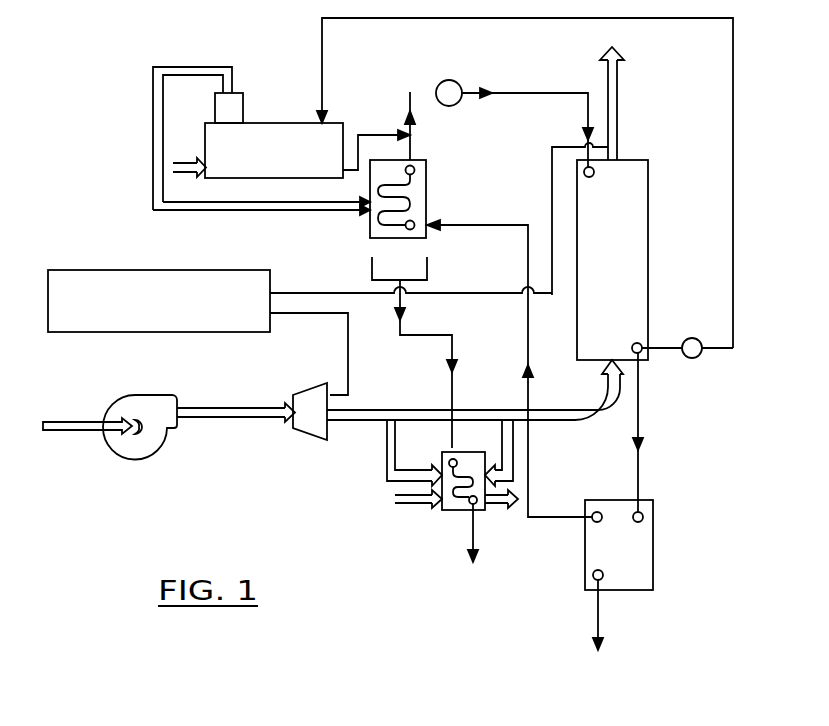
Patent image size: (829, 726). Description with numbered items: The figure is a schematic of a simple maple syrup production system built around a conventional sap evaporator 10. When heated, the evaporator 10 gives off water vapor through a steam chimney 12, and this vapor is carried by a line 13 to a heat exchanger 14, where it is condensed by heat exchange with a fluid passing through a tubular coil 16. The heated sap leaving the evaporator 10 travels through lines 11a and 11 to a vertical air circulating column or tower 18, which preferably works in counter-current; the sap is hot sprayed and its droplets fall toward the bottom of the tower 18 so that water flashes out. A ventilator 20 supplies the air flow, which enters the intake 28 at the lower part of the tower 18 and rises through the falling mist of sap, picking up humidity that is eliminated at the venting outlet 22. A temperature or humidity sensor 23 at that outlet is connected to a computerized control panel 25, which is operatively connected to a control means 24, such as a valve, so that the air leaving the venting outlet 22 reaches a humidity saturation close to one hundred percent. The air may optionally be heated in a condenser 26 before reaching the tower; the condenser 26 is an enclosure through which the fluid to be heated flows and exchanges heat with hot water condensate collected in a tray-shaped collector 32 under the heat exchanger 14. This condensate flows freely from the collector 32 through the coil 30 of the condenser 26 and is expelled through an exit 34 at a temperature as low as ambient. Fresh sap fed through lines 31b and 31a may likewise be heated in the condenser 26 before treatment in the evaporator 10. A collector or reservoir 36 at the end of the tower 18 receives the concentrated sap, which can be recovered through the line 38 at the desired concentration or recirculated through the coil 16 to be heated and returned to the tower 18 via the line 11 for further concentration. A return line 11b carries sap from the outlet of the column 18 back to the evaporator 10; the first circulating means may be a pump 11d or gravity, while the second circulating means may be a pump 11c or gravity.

The sap evaporator 10 is at (257, 166).
The line 11 is at (534, 92).
The line 11a is at (381, 133).
The return line 11b is at (733, 133).
The pump 11c is at (700, 357).
The pump 11d is at (451, 80).
The steam chimney 12 is at (245, 106).
The line 13 is at (245, 211).
The heat exchanger 14 is at (427, 197).
The tubular coil 16 is at (375, 227).
The vertical air circulating column or tower 18 is at (648, 272).
The ventilator 20 is at (143, 393).
The venting outlet 22 is at (617, 132).
The temperature or humidity sensor 23 is at (597, 147).
The control means 24 is at (307, 387).
The computerized control panel 25 is at (100, 270).
The condenser 26 is at (440, 466).
The intake 28 is at (578, 421).
The coil 30 is at (472, 452).
The line 31a is at (180, 162).
The line 31b is at (398, 504).
The collector 32 is at (427, 265).
The exit 34 is at (468, 533).
The collector or reservoir 36 is at (653, 562).
The line 38 is at (598, 620).